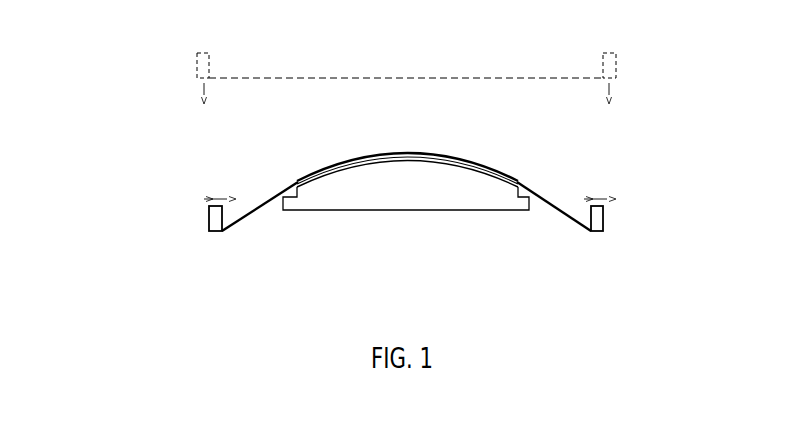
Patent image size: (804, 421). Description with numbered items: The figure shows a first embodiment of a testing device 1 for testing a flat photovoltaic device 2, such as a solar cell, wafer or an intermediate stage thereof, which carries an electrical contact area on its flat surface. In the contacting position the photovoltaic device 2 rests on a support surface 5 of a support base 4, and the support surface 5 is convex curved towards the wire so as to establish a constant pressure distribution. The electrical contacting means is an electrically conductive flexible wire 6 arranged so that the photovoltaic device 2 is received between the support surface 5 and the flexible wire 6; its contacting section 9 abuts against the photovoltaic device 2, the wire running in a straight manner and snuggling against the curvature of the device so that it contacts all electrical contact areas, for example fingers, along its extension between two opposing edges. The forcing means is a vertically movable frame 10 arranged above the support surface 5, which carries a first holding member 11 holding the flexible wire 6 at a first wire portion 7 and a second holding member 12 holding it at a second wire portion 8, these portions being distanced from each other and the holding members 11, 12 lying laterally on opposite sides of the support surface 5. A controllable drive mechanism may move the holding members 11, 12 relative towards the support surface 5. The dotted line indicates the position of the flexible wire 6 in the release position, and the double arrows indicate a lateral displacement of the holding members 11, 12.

The testing device 1 is at (152, 114).
The photovoltaic device 2 is at (487, 173).
The support base 4 is at (413, 200).
The support surface 5 is at (352, 162).
The flexible wire 6 is at (386, 78).
The first wire portion 7 is at (236, 212).
The second wire portion 8 is at (583, 214).
The contacting section 9 is at (430, 151).
The frame 10 is at (210, 218).
The first holding member 11 is at (197, 78).
The second holding member 12 is at (614, 78).